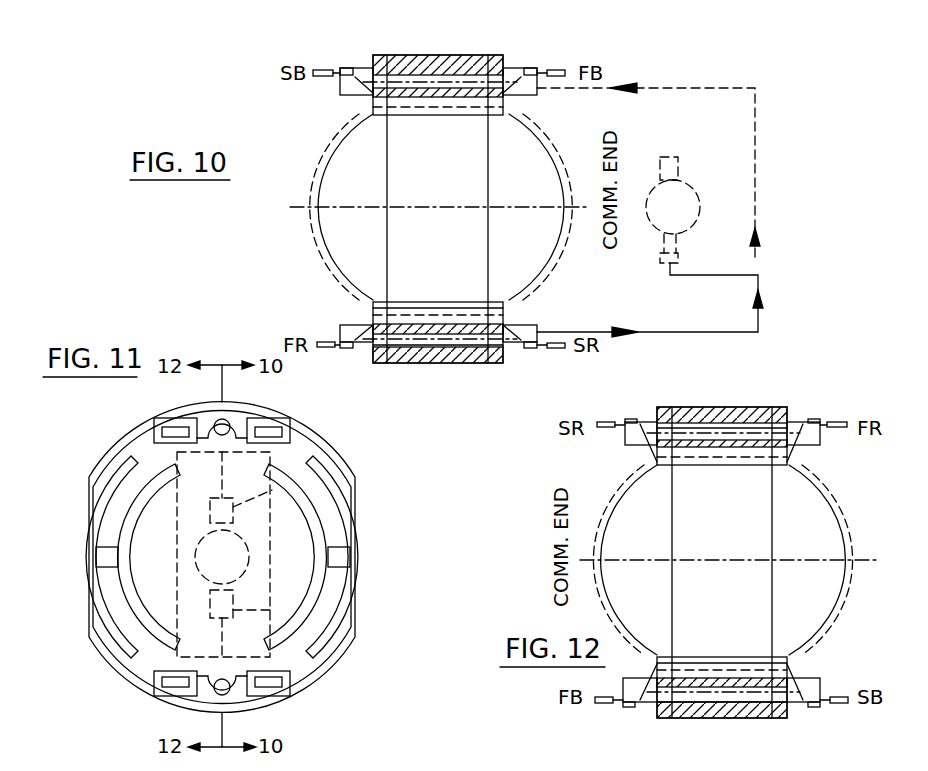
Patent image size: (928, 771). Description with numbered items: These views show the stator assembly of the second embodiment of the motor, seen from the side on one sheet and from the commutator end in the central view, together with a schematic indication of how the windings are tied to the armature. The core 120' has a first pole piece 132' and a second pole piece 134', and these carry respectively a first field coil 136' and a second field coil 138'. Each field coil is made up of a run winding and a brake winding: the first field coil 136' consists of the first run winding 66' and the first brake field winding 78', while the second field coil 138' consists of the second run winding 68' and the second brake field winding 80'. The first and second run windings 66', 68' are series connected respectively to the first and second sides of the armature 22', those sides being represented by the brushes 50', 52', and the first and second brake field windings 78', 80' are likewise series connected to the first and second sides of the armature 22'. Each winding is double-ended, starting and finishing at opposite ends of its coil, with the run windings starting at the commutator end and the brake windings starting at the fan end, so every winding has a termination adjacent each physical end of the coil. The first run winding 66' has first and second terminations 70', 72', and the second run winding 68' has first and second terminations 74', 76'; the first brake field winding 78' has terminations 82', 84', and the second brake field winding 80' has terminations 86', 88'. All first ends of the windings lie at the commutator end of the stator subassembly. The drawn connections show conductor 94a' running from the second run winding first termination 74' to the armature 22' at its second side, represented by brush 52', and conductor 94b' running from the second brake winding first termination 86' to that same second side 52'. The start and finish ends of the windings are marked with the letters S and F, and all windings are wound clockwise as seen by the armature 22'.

In FIG. 10, the armature 22' is at (728, 207).
In FIG. 11, the armature 22' is at (301, 559).
In FIG. 10, the brush 50' is at (732, 151).
In FIG. 11, the brush 50' is at (277, 536).
In FIG. 10, the brush 52' is at (740, 250).
In FIG. 11, the brush 52' is at (310, 623).
In FIG. 12, the first run winding 66' is at (742, 556).
In FIG. 10, the second run winding 68' is at (408, 207).
In FIG. 11, the first termination of first run winding 70' is at (200, 552).
In FIG. 12, the first termination of first run winding 70' is at (629, 413).
In FIG. 12, the second termination of first run winding 72' is at (826, 413).
In FIG. 10, the first termination of second run winding 74' is at (527, 370).
In FIG. 11, the first termination of second run winding 74' is at (307, 704).
In FIG. 10, the second termination of second run winding 76' is at (320, 310).
In FIG. 12, the first brake field winding 78' is at (748, 560).
In FIG. 10, the second brake field winding 80' is at (412, 199).
In FIG. 11, the first termination of first brake field winding 82' is at (135, 704).
In FIG. 12, the first termination of first brake field winding 82' is at (622, 706).
In FIG. 12, the second termination of first brake field winding 84' is at (819, 706).
In FIG. 10, the first termination of second brake field winding 86' is at (561, 54).
In FIG. 11, the first termination of second brake field winding 86' is at (304, 410).
In FIG. 10, the second termination of second brake field winding 88' is at (325, 54).
In FIG. 10, the conductor 94a' is at (650, 300).
In FIG. 10, the conductor 94b' is at (648, 154).
In FIG. 10, the core 120' is at (440, 58).
In FIG. 11, the first pole piece 132' is at (104, 557).
In FIG. 12, the first pole piece 132' is at (722, 562).
In FIG. 10, the second pole piece 134' is at (437, 209).
In FIG. 11, the second pole piece 134' is at (339, 557).
In FIG. 11, the first field coil 136' is at (85, 551).
In FIG. 11, the second field coil 138' is at (360, 555).